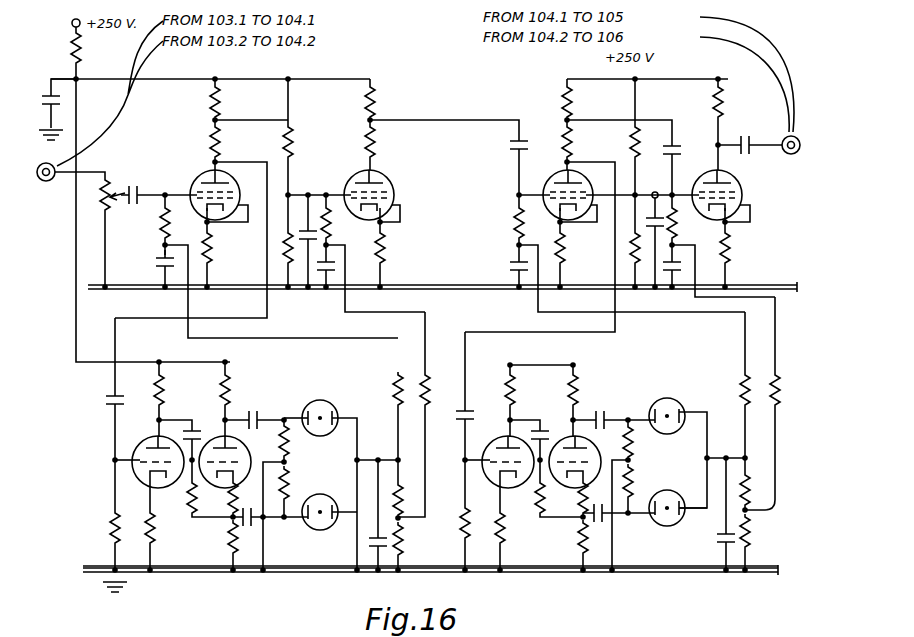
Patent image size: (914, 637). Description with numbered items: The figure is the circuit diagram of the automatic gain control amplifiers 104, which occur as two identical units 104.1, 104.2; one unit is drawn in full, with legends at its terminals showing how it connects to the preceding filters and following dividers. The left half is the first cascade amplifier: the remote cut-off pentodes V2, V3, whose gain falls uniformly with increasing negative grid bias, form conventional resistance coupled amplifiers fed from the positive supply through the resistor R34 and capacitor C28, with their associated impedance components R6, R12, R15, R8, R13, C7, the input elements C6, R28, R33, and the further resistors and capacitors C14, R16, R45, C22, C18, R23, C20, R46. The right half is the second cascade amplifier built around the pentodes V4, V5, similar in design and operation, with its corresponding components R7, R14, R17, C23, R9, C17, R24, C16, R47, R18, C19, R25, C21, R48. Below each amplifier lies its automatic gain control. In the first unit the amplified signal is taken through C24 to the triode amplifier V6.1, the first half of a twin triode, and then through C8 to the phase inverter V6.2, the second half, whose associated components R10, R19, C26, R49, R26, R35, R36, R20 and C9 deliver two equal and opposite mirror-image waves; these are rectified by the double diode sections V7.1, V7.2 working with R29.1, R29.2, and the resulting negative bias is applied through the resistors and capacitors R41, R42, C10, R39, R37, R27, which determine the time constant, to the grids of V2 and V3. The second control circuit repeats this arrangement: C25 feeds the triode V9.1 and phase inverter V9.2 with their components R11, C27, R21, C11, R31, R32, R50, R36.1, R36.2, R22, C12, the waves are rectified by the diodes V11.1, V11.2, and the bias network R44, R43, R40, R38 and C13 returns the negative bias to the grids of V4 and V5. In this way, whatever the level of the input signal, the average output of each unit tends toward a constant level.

The automatic gain control amplifiers 104 is at (273, 597).
The first automatic gain control amplifier 104.1 is at (484, 100).
The second automatic gain control amplifier 104.2 is at (607, 71).
The resistor R34 is at (94, 53).
The capacitor C28 is at (62, 100).
The resistor R6 is at (229, 102).
The resistor R12 is at (233, 142).
The resistor R15 is at (290, 130).
The resistor R8 is at (383, 102).
The resistor R13 is at (389, 142).
The capacitor C7 is at (449, 162).
The resistor R7 is at (580, 102).
The resistor R14 is at (586, 142).
The resistor R17 is at (637, 135).
The capacitor C23 is at (676, 160).
The resistor R9 is at (722, 120).
The capacitor C17 is at (750, 135).
The remote cut-off pentode amplifier tube V2 is at (200, 178).
The remote cut-off pentode amplifier tube V3 is at (385, 178).
The remote cut-off pentode amplifier tube V4 is at (545, 190).
The remote cut-off pentode amplifier tube V5 is at (745, 180).
The capacitor C6 is at (128, 185).
The resistor R28 is at (95, 205).
The resistor R33 is at (144, 225).
The capacitor C14 is at (147, 267).
The resistor R16 is at (284, 245).
The resistor R45 is at (225, 247).
The capacitor C22 is at (308, 192).
The capacitor C18 is at (304, 250).
The resistor R23 is at (344, 218).
The capacitor C20 is at (336, 268).
The resistor R46 is at (398, 246).
The resistor R24 is at (492, 223).
The capacitor C16 is at (499, 263).
The resistor R47 is at (576, 246).
The resistor R18 is at (630, 248).
The capacitor C19 is at (653, 224).
The resistor R25 is at (689, 219).
The capacitor C21 is at (670, 275).
The resistor R48 is at (746, 246).
The capacitor C24 is at (105, 400).
The resistor R10 is at (177, 399).
The resistor R19 is at (245, 399).
The capacitor C26 is at (180, 436).
The capacitor C8 is at (254, 410).
The triode amplifier V6.1 is at (135, 452).
The phase inverter V6.2 is at (242, 462).
The resistor R49 is at (185, 500).
The resistor R26 is at (110, 540).
The resistor R35 is at (166, 524).
The resistor R36 is at (218, 510).
The resistor R20 is at (211, 545).
The capacitor C9 is at (255, 525).
The resistor R29.1 is at (309, 441).
The resistor R29.2 is at (309, 490).
The diode V7.1 is at (332, 387).
The diode V7.2 is at (320, 525).
The resistor R41 is at (396, 385).
The resistor R42 is at (423, 395).
The capacitor C10 is at (361, 515).
The resistor R39 is at (402, 505).
The resistor R37 is at (399, 560).
The resistor R27 is at (462, 548).
The capacitor C25 is at (452, 396).
The triode amplifier V9.1 is at (495, 440).
The phase inverter V9.2 is at (585, 440).
The resistor R11 is at (528, 401).
The capacitor C27 is at (529, 436).
The resistor R21 is at (591, 400).
The capacitor C11 is at (604, 414).
The resistor R31 is at (646, 440).
The resistor R32 is at (646, 488).
The diode V11.1 is at (672, 396).
The diode V11.2 is at (672, 527).
The resistor R44 is at (770, 378).
The resistor R43 is at (725, 392).
The resistor R50 is at (542, 495).
The resistor R36.1 is at (580, 505).
The resistor R36.2 is at (523, 524).
The resistor R22 is at (582, 560).
The capacitor C12 is at (605, 525).
The capacitor C13 is at (728, 552).
The resistor R40 is at (748, 490).
The resistor R38 is at (764, 542).